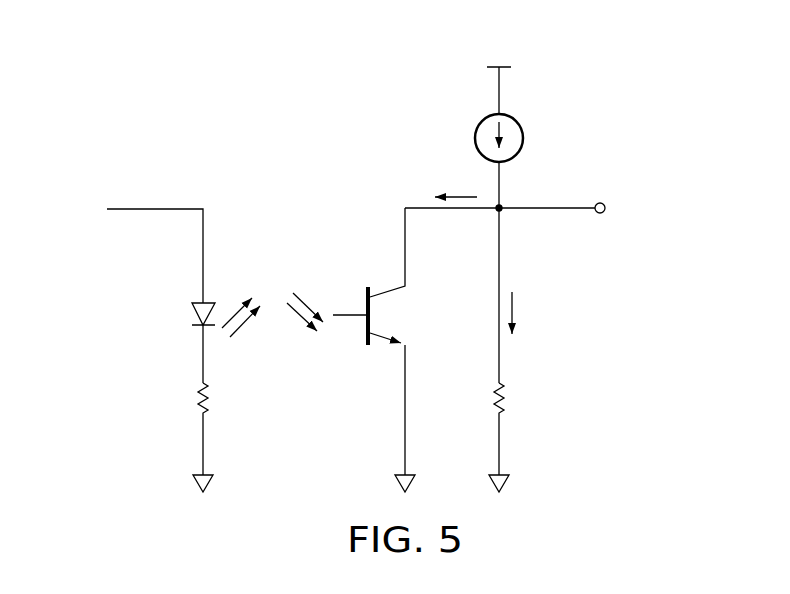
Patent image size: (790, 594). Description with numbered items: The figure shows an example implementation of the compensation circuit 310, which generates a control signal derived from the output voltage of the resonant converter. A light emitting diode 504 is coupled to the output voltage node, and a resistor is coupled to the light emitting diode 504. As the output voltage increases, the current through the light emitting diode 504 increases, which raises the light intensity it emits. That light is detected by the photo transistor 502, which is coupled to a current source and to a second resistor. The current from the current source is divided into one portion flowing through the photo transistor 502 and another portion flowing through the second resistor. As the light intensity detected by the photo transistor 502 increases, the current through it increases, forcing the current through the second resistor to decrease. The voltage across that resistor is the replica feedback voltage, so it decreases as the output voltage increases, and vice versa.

The compensation circuit 310 is at (224, 75).
The photo transistor 502 is at (365, 300).
The light emitting diode 504 is at (193, 315).